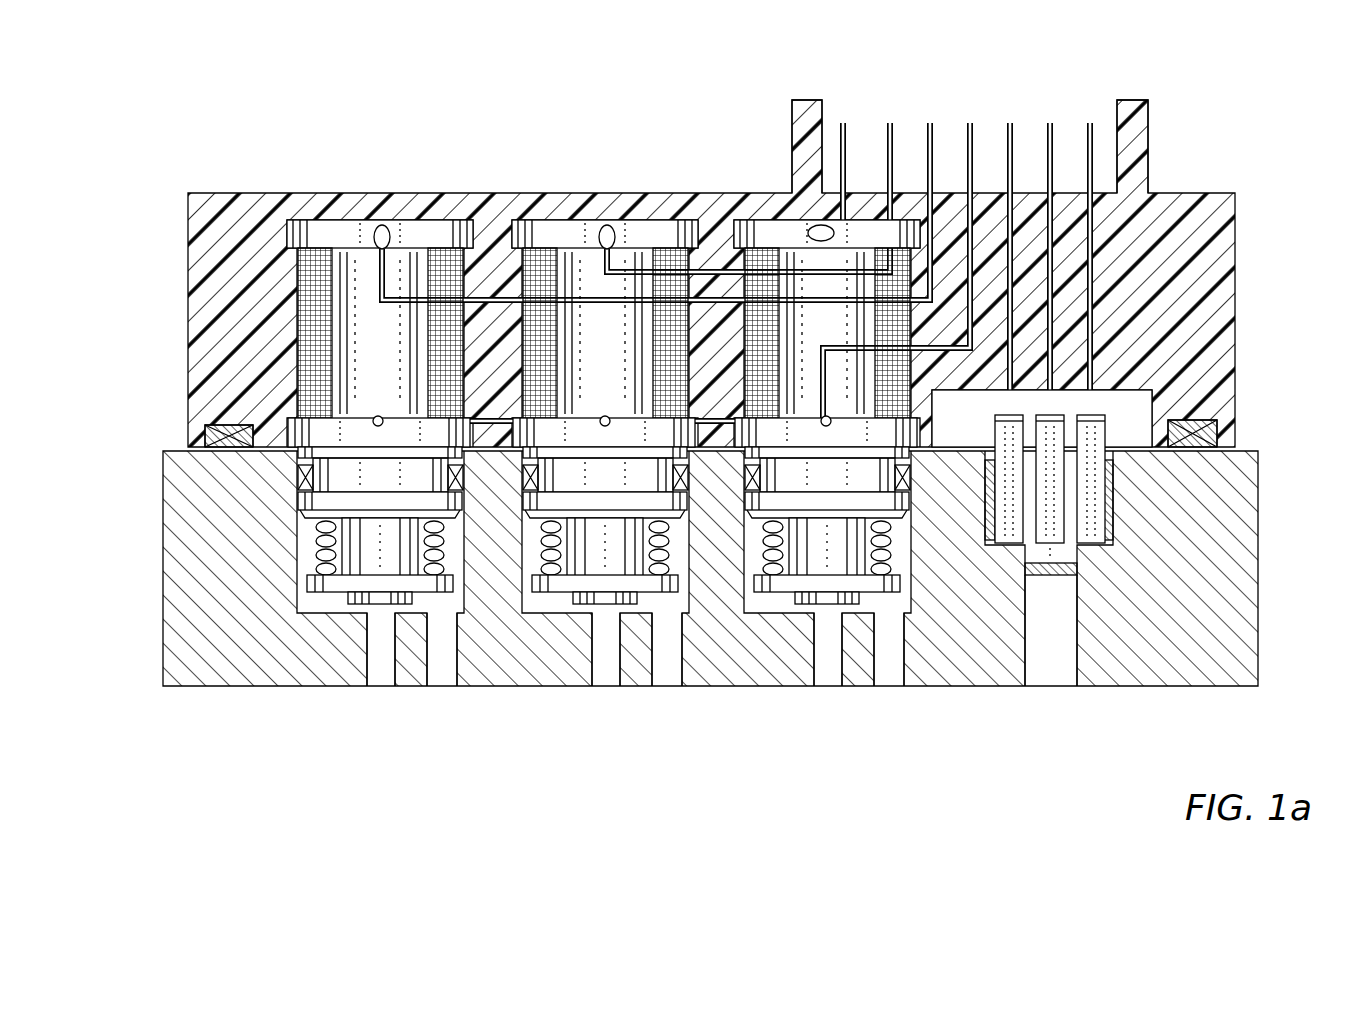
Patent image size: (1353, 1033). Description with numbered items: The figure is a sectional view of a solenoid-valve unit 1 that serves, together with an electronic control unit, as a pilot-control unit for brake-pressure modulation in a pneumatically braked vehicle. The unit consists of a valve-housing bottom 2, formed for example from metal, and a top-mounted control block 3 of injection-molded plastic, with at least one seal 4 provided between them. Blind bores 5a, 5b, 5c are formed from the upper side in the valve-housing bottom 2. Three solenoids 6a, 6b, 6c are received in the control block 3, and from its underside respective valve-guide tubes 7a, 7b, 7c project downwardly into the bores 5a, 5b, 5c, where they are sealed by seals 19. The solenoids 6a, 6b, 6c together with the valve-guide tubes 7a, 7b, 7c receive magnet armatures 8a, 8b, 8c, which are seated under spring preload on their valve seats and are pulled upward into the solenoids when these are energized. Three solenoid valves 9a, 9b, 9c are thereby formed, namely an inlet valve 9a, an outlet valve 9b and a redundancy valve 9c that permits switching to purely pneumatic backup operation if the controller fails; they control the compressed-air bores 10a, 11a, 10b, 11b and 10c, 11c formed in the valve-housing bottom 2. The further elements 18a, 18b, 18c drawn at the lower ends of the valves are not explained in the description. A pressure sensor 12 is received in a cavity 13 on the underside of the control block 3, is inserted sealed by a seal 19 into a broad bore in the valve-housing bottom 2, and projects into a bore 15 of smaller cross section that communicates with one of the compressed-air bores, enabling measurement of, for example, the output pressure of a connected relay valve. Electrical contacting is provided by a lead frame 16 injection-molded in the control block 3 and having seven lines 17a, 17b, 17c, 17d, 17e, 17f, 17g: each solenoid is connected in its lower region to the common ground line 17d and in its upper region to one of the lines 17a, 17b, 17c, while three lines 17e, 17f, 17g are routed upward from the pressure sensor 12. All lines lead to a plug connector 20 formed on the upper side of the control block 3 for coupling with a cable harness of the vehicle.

The solenoid-valve unit 1 is at (700, 405).
The valve-housing bottom 2 is at (214, 688).
The control block 3 is at (235, 230).
The seal 4 is at (202, 434).
The bore 5a is at (333, 596).
The bore 5b is at (557, 596).
The bore 5c is at (780, 596).
The solenoid 6a is at (321, 244).
The solenoid 6b is at (558, 243).
The solenoid 6c is at (758, 240).
The valve-guide tube 7a is at (412, 486).
The valve-guide tube 7b is at (637, 486).
The valve-guide tube 7c is at (859, 486).
The magnet armature 8a is at (360, 566).
The magnet armature 8b is at (585, 566).
The magnet armature 8c is at (807, 566).
The solenoid valve 9a is at (639, 437).
The solenoid valve 9b is at (592, 436).
The solenoid valve 9c is at (808, 436).
The compressed-air bore 10a is at (378, 673).
The compressed-air bore 10b is at (603, 673).
The compressed-air bore 10c is at (825, 673).
The compressed-air bore 11a is at (446, 665).
The compressed-air bore 11b is at (670, 665).
The compressed-air bore 11c is at (892, 665).
The pressure sensor 12 is at (1040, 578).
The cavity 13 is at (1133, 410).
The bore 15 is at (1060, 650).
The lead frame 16 is at (737, 273).
The line 17a is at (843, 121).
The line 17b is at (890, 121).
The line 17c is at (930, 121).
The common ground line 17d is at (970, 121).
The line 17e is at (1010, 121).
The line 17f is at (1050, 121).
The line 17g is at (1090, 121).
The valve seat 18a is at (357, 650).
The valve seat 18b is at (582, 650).
The valve seat 18c is at (804, 650).
The seal 19 is at (300, 476).
The plug connector 20 is at (792, 219).